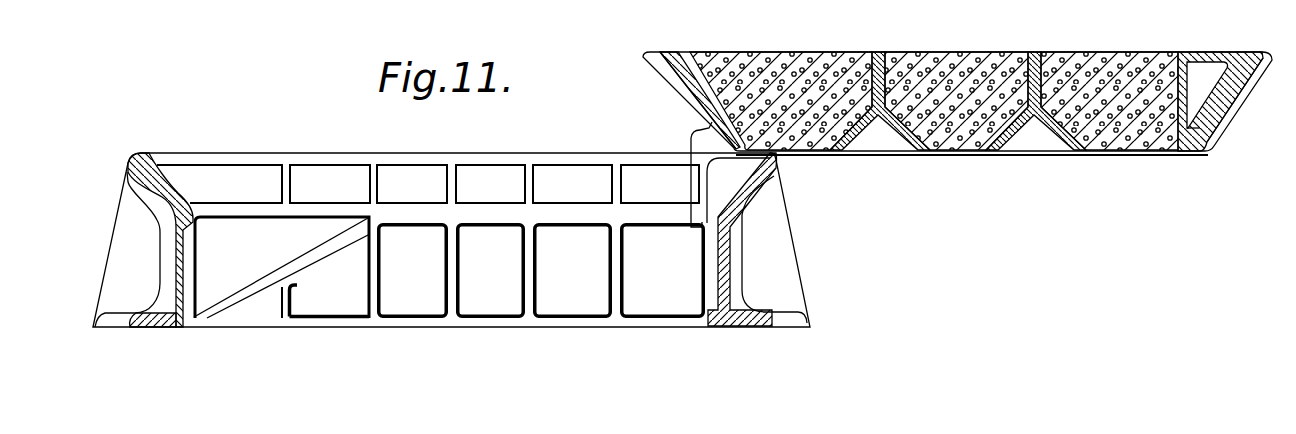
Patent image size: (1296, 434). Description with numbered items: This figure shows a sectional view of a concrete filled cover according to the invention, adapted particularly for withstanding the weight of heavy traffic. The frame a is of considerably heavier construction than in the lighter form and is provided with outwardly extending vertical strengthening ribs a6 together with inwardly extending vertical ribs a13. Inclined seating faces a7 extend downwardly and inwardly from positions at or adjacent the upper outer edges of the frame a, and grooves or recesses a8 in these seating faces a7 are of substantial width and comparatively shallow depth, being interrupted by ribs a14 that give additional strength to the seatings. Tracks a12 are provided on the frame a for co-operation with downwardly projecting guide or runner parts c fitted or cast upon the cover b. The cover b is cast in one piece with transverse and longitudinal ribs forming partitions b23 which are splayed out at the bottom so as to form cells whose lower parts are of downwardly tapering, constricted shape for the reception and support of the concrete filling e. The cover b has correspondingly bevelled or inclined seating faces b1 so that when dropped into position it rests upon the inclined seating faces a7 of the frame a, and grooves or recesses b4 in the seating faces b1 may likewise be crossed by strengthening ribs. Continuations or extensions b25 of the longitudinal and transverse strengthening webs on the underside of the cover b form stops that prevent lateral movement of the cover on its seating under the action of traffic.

The frame a is at (323, 327).
The vertical ribs a6 is at (130, 293).
The inclined seating faces a7 is at (140, 162).
The grooves or recesses a8 is at (200, 177).
The tracks a12 is at (292, 263).
The inwardly extending vertical ribs a13 is at (190, 267).
The ribs a14 is at (373, 183).
The cover b is at (882, 156).
The inclined seating faces b1 is at (649, 61).
The grooves or recesses b4 is at (1247, 100).
The partitions b23 is at (881, 72).
The continuations or extensions b25 is at (1222, 152).
The guide or runner parts c is at (695, 185).
The concrete filling e is at (793, 62).